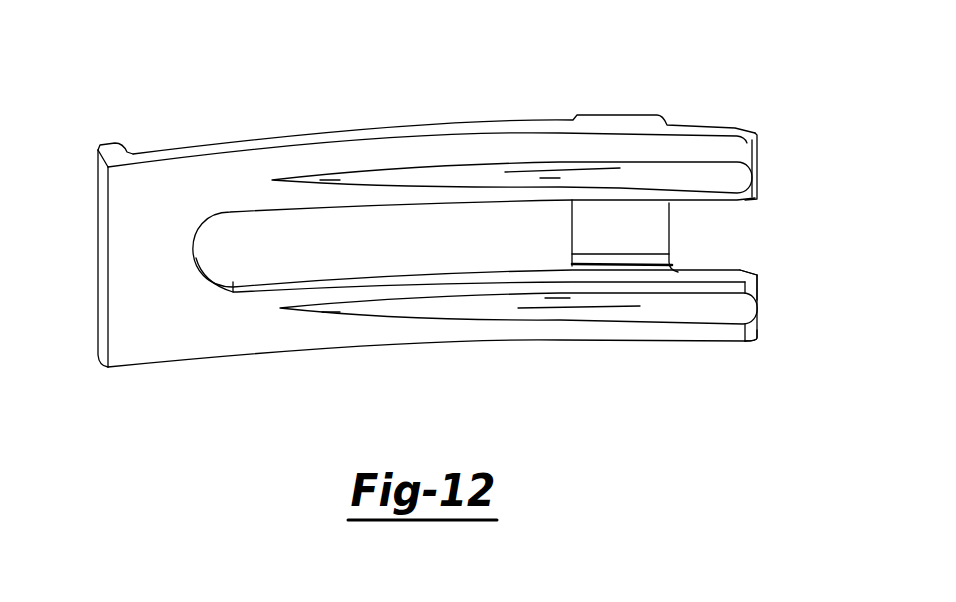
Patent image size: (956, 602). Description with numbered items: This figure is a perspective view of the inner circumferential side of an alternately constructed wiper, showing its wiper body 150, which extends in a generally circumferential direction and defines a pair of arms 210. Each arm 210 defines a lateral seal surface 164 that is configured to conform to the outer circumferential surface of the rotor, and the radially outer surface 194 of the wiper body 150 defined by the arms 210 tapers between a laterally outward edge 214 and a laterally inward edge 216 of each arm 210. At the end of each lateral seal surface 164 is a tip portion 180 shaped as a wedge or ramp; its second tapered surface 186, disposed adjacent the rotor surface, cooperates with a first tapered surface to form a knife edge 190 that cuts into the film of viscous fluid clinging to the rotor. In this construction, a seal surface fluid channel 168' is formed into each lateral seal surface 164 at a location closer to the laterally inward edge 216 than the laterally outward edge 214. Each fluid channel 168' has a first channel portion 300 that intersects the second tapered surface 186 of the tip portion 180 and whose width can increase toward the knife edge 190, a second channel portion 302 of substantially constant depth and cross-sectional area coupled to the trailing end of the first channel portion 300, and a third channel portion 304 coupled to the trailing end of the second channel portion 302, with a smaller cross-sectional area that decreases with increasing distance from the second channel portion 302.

The wiper body 150 is at (230, 147).
The radially outer surface 194 is at (153, 146).
The lateral seal surface 164 is at (395, 152).
The arm 210 is at (421, 140).
The laterally outward edge 214 is at (478, 134).
The seal surface fluid channel 168' is at (571, 249).
The second tapered surface 186 is at (752, 133).
The first channel portion 300 is at (733, 178).
The laterally inward edge 216 is at (680, 206).
The tip portion 180 is at (768, 286).
The knife edge 190 is at (760, 321).
The second channel portion 302 is at (570, 298).
The third channel portion 304 is at (326, 312).